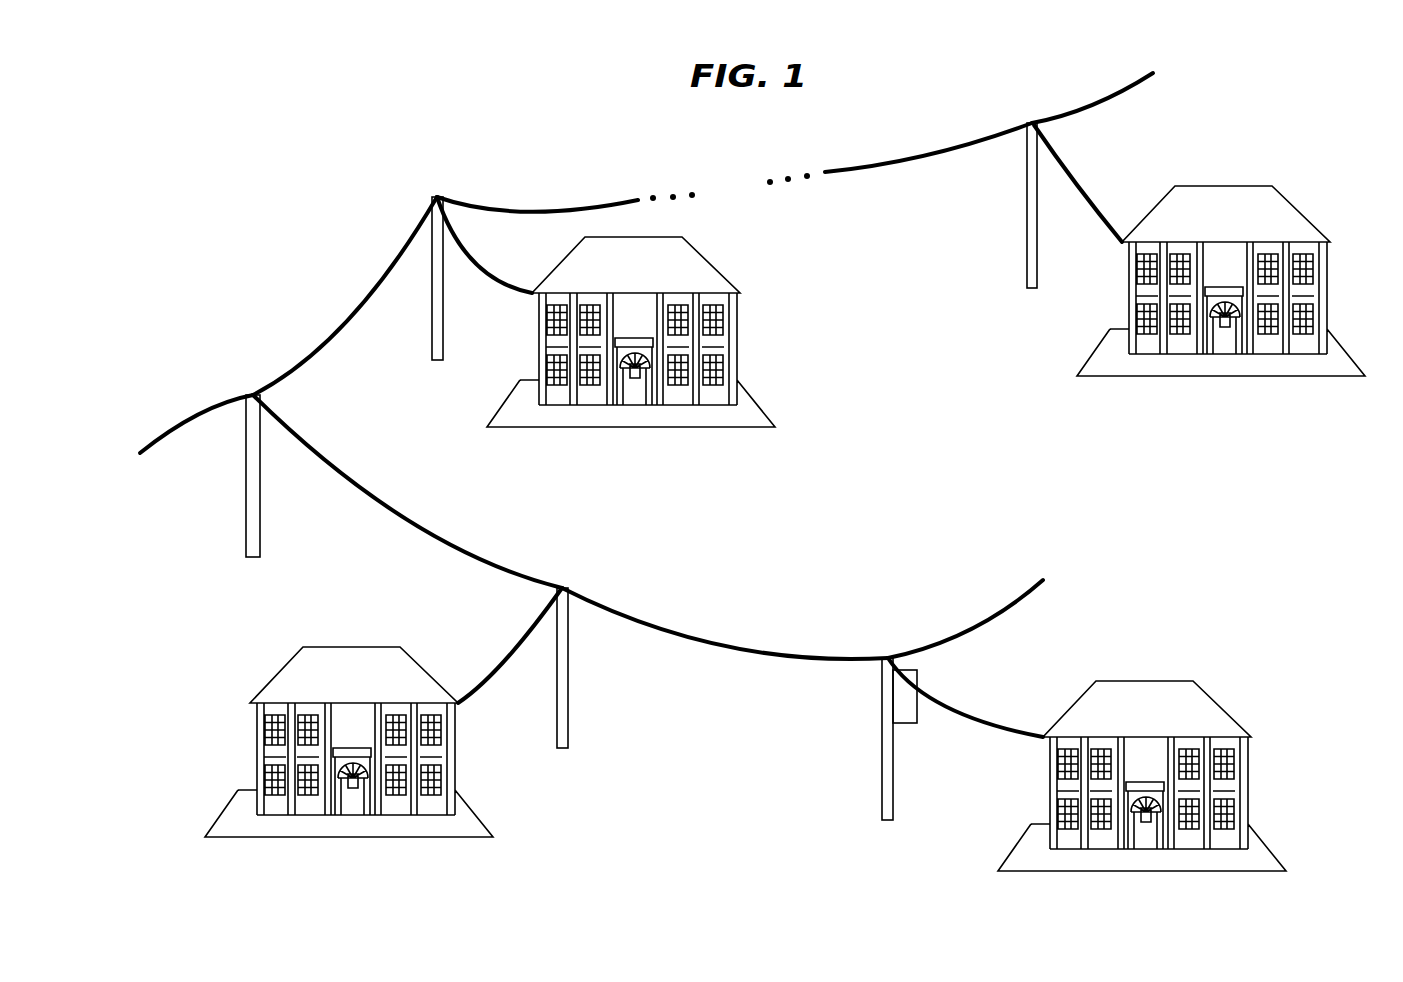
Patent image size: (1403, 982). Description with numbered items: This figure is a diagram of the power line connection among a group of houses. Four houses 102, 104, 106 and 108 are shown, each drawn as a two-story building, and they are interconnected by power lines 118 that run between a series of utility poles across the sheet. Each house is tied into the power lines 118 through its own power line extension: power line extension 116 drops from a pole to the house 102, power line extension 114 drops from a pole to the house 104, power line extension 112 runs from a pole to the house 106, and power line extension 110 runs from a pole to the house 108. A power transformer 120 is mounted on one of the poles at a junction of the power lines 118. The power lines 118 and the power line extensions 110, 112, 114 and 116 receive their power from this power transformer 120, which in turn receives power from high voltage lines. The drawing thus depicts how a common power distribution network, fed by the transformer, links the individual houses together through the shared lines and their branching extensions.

The house 102 is at (1297, 207).
The house 104 is at (707, 260).
The house 106 is at (282, 675).
The house 108 is at (1213, 700).
The power line extension 110 is at (982, 718).
The power line extension 112 is at (502, 663).
The power line extension 114 is at (490, 268).
The power line extension 116 is at (1073, 177).
The power lines 118 is at (303, 350).
The power transformer 120 is at (918, 678).